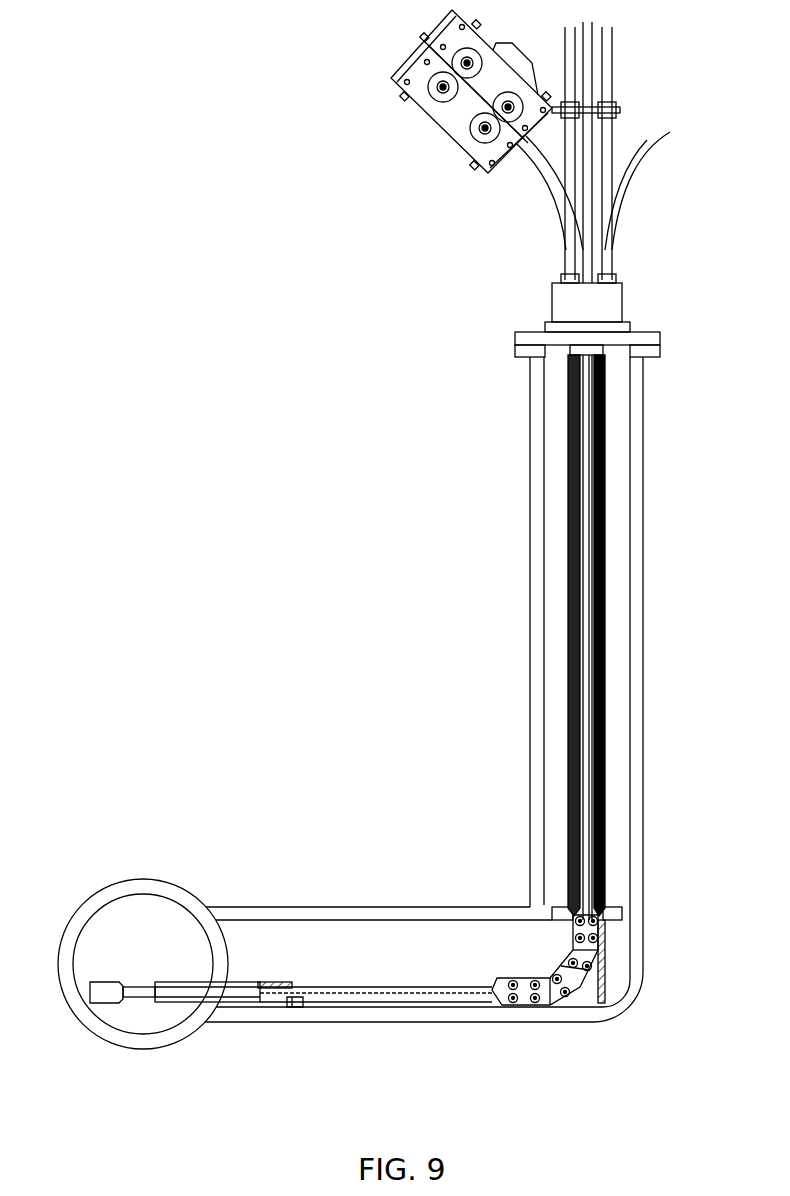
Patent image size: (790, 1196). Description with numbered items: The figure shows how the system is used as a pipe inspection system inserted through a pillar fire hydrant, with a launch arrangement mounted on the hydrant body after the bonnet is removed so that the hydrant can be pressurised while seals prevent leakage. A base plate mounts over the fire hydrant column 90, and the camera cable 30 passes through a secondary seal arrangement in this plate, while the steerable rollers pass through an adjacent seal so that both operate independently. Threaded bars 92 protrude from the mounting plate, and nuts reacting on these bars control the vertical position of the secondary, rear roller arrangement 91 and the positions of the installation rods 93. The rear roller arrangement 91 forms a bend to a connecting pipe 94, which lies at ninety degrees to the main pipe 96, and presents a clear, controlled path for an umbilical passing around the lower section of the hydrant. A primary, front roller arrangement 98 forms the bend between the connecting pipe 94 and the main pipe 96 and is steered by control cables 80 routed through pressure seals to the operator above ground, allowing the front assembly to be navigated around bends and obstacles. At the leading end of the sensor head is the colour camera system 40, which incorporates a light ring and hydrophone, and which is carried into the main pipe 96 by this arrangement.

The camera cable 30 is at (555, 188).
The colour camera system 40 is at (93, 1003).
The control cables 80 is at (652, 146).
The fire hydrant column 90 is at (642, 480).
The secondary roller arrangement 91 is at (542, 1007).
The threaded bars 92 is at (612, 77).
The installation rods 93 is at (605, 700).
The connecting pipe 94 is at (262, 905).
The main pipe 96 is at (140, 880).
The primary roller arrangement 98 is at (238, 1007).